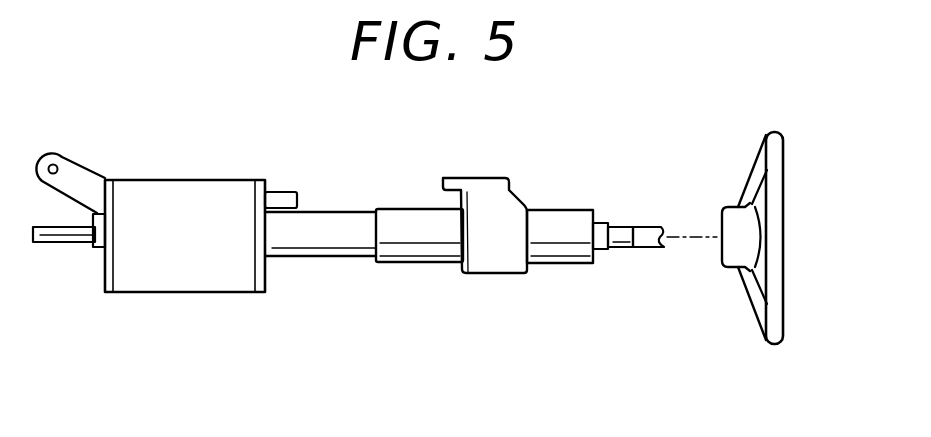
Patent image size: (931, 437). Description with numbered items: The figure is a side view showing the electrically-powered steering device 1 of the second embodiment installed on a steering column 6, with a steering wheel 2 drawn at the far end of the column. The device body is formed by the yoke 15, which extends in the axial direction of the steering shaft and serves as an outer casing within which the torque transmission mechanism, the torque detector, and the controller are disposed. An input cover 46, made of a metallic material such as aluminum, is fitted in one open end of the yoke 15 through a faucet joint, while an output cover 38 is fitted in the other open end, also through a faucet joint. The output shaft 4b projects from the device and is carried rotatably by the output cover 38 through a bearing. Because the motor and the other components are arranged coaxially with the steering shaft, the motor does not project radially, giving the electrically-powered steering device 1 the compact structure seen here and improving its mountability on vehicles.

The electrically-powered steering device 1 is at (348, 234).
The steering wheel 2 is at (776, 156).
The output shaft 4b is at (57, 243).
The steering column 6 is at (438, 236).
The yoke 15 is at (197, 281).
The output cover 38 is at (104, 293).
The input cover 46 is at (266, 290).